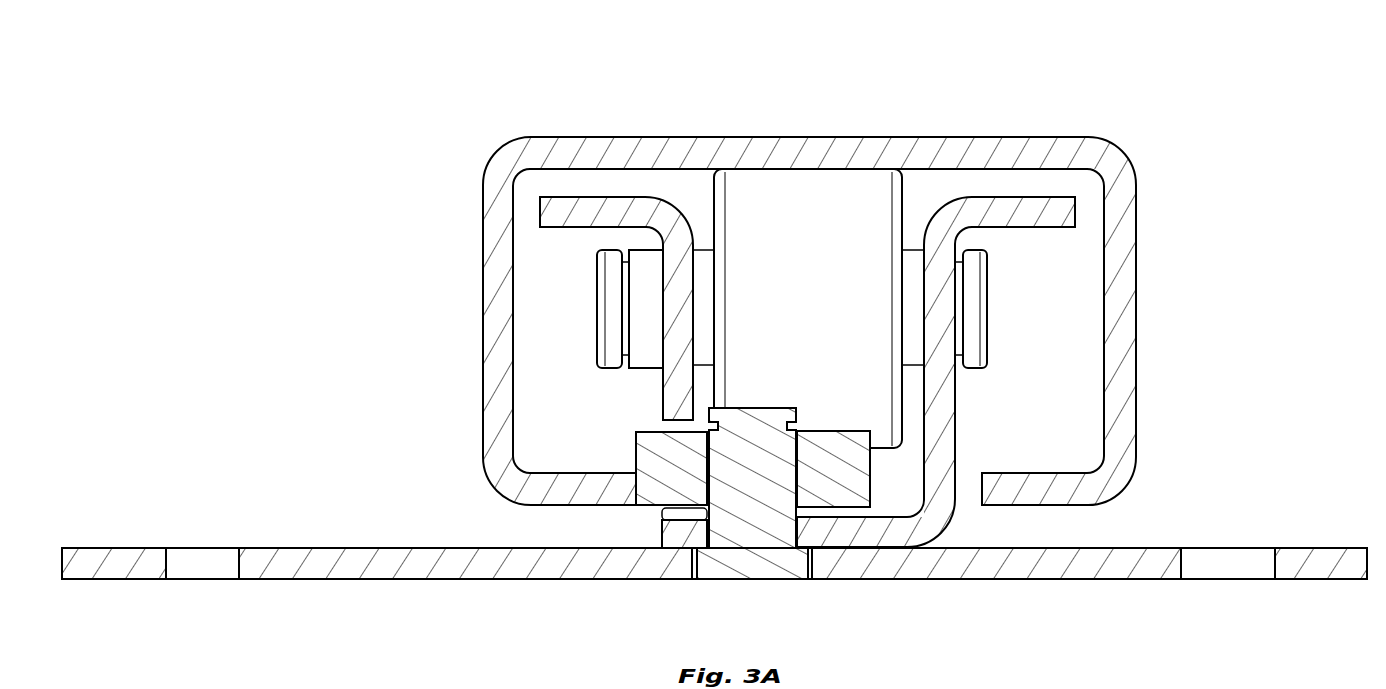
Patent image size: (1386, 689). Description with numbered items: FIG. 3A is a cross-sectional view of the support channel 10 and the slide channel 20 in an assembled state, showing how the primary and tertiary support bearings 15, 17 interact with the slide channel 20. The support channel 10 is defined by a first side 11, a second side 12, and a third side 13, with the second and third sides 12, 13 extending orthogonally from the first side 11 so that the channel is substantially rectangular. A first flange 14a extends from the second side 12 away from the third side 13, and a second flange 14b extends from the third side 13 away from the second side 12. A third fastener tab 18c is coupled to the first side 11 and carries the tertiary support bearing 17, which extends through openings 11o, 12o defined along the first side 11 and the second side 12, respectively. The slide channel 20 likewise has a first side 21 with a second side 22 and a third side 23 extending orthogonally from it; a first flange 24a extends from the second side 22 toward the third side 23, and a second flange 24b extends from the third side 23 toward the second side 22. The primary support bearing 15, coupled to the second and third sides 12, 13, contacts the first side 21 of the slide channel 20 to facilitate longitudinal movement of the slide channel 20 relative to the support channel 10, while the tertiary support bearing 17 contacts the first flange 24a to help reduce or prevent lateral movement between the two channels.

The slide channel 20 is at (1110, 83).
The first side of slide channel 21 is at (801, 152).
The second side of slide channel 22 is at (490, 224).
The third side of slide channel 23 is at (1128, 224).
The first flange of slide channel 24a is at (576, 500).
The second flange of slide channel 24b is at (1042, 498).
The first flange of support channel 14a is at (583, 210).
The second flange of support channel 14b is at (1015, 205).
The primary support bearing 15 is at (871, 190).
The second side of support channel 12 is at (665, 393).
The opening in second side 12o is at (668, 427).
The third side of support channel 13 is at (952, 392).
The tertiary support bearing 17 is at (658, 497).
The first side of support channel 11 is at (855, 535).
The opening in first side 11o is at (716, 530).
The support channel 10 is at (962, 588).
The third fastener tab 18c is at (313, 572).